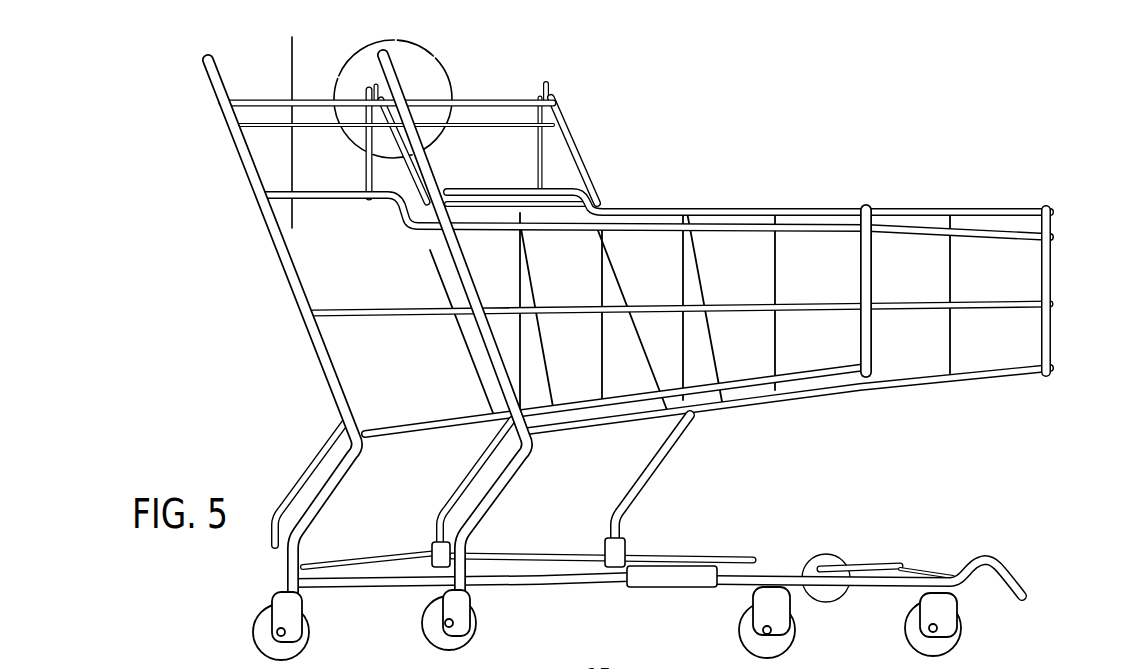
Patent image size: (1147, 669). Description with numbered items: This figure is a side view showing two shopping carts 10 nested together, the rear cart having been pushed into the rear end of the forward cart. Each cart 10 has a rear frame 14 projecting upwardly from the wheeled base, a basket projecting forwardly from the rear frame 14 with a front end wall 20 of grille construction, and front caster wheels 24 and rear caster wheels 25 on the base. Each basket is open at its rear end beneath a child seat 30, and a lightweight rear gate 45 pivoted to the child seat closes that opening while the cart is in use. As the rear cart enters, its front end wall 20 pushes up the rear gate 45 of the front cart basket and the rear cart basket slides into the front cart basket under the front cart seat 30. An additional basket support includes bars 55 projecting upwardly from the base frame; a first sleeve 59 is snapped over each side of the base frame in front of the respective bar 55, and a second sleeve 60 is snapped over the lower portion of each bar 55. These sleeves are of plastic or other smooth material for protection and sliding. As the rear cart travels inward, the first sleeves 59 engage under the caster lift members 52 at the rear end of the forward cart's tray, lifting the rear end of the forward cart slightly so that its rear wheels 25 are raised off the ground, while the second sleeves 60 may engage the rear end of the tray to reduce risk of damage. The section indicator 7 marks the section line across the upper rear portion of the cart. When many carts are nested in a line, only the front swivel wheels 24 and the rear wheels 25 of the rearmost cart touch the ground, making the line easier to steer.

The section line 7- 7 is at (300, 45).
The shopping cart 10 is at (648, 357).
The rear frame 14 is at (312, 357).
The front end wall 20 is at (880, 250).
The front caster wheels 24 is at (745, 625).
The rear caster wheels 25 is at (250, 630).
The child seat 30 is at (318, 143).
The rear gate 45 is at (478, 210).
The caster lift members 52 is at (307, 545).
The bars 55 is at (473, 480).
The first sleeve 59 is at (673, 572).
The second sleeve 60 is at (440, 543).